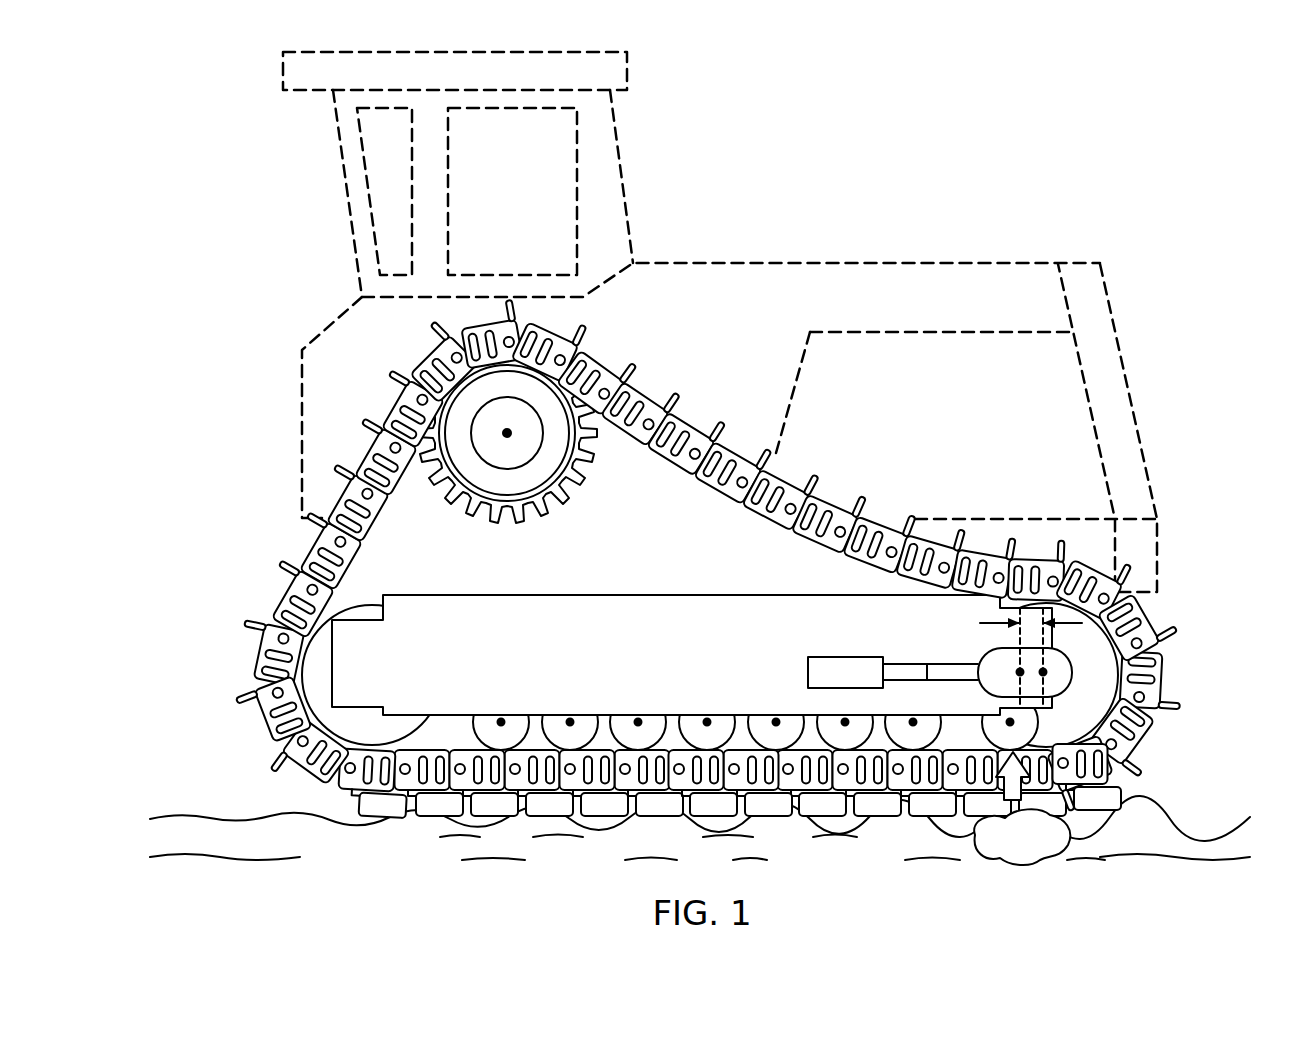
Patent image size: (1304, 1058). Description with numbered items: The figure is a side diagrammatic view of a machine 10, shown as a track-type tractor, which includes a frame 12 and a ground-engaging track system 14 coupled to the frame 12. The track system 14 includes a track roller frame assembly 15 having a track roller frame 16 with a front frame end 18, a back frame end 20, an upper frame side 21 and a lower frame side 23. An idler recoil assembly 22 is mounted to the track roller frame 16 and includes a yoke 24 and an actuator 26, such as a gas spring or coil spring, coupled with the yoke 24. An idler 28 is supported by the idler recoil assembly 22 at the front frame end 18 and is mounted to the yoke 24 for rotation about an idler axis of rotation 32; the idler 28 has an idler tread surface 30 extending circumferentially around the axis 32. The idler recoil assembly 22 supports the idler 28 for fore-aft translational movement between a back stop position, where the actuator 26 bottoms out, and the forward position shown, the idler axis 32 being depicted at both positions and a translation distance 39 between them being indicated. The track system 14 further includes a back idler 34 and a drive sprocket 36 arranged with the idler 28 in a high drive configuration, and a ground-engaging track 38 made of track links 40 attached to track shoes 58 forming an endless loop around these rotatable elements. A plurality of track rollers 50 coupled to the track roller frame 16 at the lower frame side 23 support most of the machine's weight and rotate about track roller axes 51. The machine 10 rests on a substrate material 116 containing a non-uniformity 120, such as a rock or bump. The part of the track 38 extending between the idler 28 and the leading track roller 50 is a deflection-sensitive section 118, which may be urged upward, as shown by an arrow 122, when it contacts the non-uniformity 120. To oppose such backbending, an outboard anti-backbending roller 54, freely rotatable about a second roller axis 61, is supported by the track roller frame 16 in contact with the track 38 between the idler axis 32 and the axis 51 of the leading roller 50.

The machine 10 is at (1174, 278).
The frame 12 is at (1160, 552).
The ground-engaging track system 14 is at (1154, 741).
The track roller frame assembly 15 is at (1022, 589).
The track roller frame 16 is at (352, 643).
The front frame end 18 is at (1080, 697).
The back frame end 20 is at (323, 672).
The upper frame side 21 is at (781, 577).
The idler recoil assembly 22 is at (804, 649).
The lower frame side 23 is at (651, 724).
The yoke 24 is at (988, 663).
The actuator 26 is at (863, 662).
The idler 28 is at (1128, 608).
The idler tread surface 30 is at (1155, 712).
The idler axis of rotation 32 is at (1052, 665).
The back idler 34 is at (353, 722).
The drive sprocket 36 is at (505, 512).
The ground-engaging track 38 is at (706, 799).
The translation distance 39 is at (982, 623).
The track links 40 is at (807, 777).
The track rollers 50 is at (490, 733).
The track roller axes 51 is at (510, 714).
The outboard anti-backbending roller 54 is at (1097, 778).
The track shoes 58 is at (868, 790).
The second roller axis 61 is at (1022, 719).
The substrate material 116 is at (1200, 815).
The deflection-sensitive section 118 is at (1071, 802).
The non-uniformity 120 is at (1012, 842).
The arrow 122 is at (997, 797).